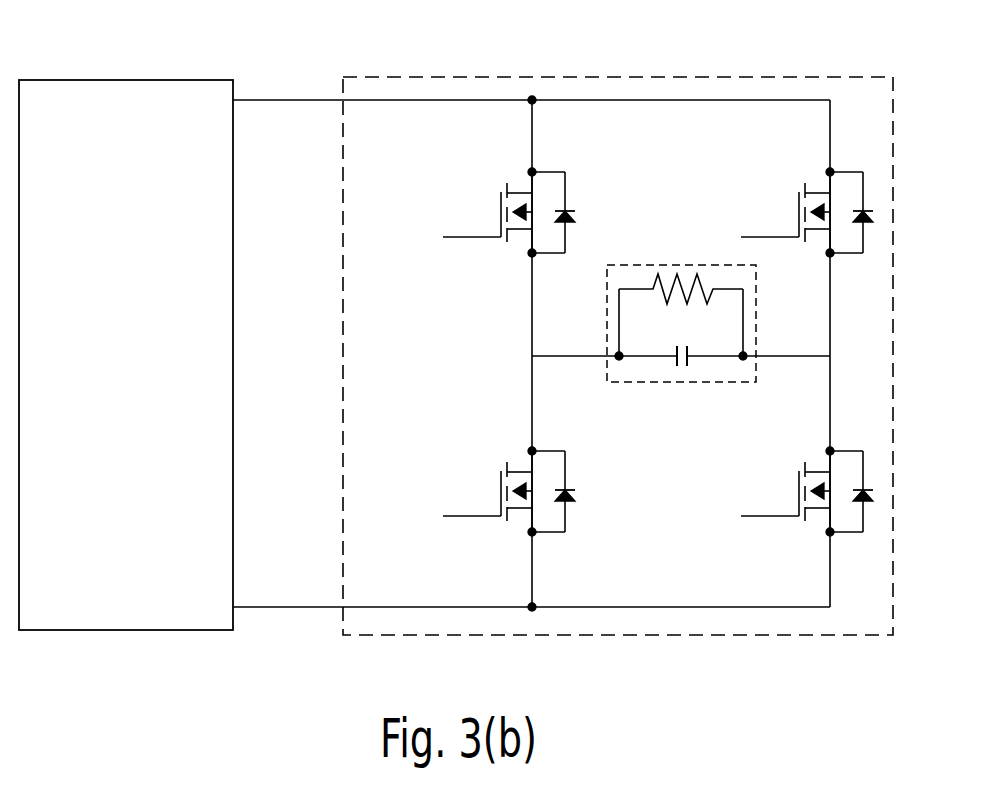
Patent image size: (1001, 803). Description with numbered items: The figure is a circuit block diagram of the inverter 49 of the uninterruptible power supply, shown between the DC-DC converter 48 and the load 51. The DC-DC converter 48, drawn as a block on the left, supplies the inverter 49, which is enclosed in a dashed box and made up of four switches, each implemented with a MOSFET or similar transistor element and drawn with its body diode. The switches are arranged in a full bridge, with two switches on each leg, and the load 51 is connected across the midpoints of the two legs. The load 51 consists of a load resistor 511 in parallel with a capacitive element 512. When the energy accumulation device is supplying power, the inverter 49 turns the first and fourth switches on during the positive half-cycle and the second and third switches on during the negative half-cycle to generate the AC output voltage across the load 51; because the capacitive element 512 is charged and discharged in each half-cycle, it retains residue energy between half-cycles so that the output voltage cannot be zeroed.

The DC-DC converter 48 is at (123, 92).
The inverter 49 is at (690, 77).
The load 51 is at (757, 300).
The load resistor 511 is at (688, 278).
The capacitive element 512 is at (682, 374).